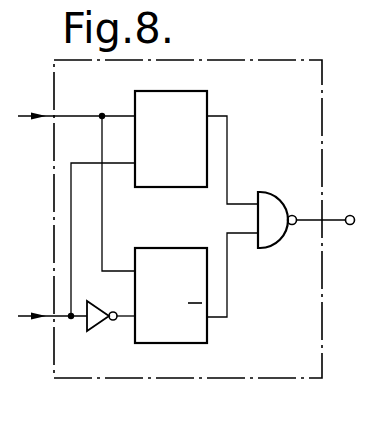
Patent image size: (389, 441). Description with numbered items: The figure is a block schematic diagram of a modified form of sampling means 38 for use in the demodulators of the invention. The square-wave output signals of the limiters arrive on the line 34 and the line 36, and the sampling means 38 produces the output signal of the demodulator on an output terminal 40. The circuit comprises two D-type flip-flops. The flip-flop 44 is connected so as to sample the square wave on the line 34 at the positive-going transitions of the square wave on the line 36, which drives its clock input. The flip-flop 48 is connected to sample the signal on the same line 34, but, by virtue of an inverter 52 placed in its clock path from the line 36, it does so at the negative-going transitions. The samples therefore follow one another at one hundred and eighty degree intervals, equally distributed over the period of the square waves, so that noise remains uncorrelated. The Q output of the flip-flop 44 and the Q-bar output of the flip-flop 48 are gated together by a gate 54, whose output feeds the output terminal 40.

The line 34 is at (50, 112).
The line 36 is at (50, 308).
The sampling means 38 is at (277, 60).
The output terminal 40 is at (350, 214).
The flip-flop 44 is at (209, 94).
The flip-flop 48 is at (185, 247).
The inverter 52 is at (99, 326).
The gate 54 is at (275, 193).